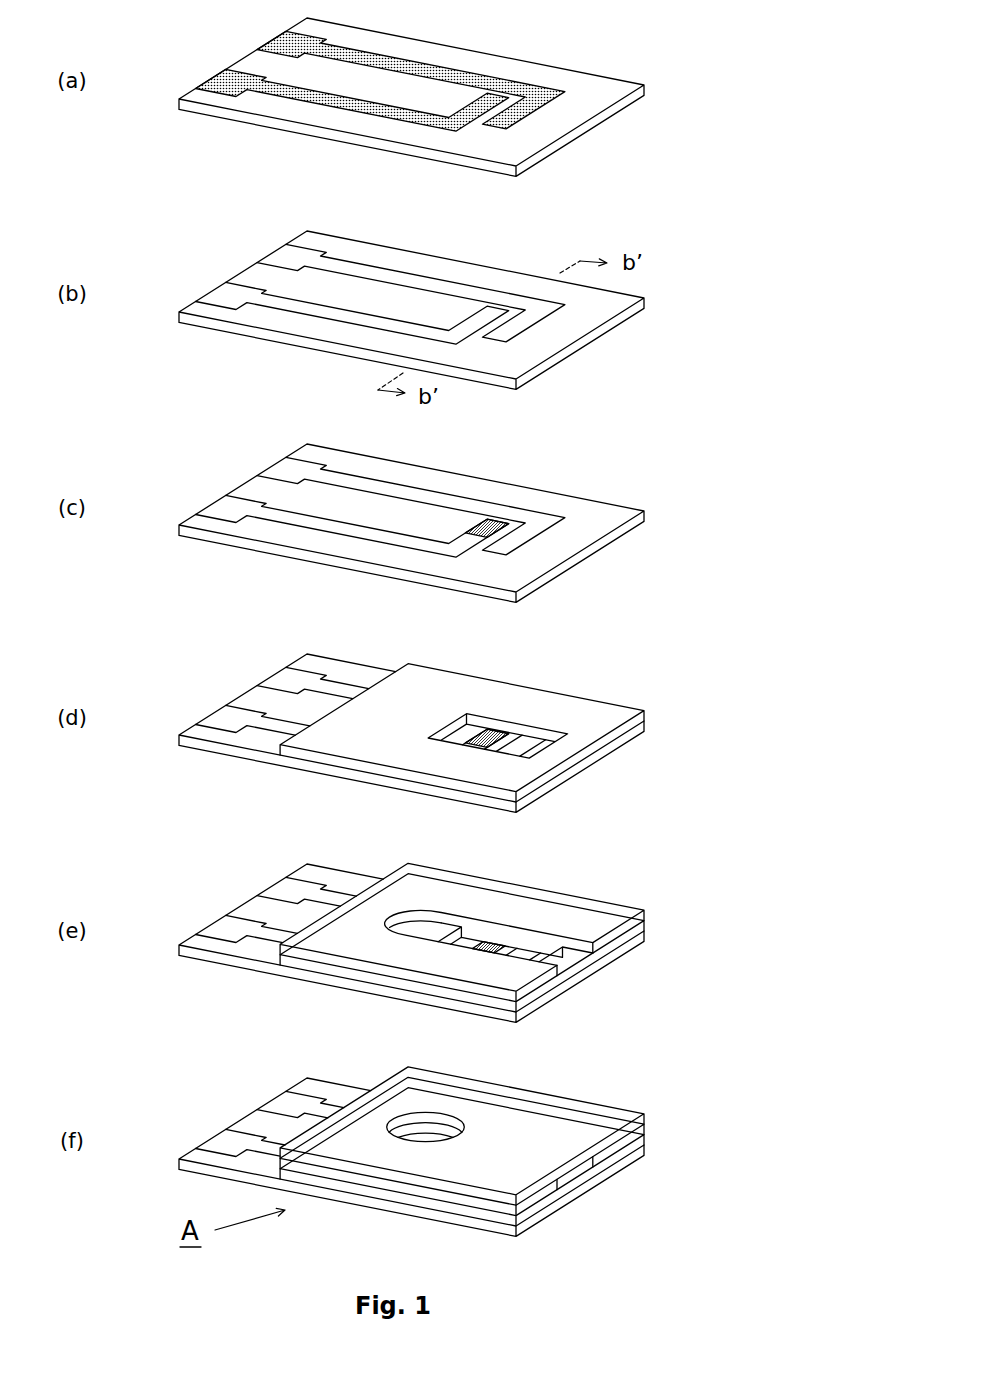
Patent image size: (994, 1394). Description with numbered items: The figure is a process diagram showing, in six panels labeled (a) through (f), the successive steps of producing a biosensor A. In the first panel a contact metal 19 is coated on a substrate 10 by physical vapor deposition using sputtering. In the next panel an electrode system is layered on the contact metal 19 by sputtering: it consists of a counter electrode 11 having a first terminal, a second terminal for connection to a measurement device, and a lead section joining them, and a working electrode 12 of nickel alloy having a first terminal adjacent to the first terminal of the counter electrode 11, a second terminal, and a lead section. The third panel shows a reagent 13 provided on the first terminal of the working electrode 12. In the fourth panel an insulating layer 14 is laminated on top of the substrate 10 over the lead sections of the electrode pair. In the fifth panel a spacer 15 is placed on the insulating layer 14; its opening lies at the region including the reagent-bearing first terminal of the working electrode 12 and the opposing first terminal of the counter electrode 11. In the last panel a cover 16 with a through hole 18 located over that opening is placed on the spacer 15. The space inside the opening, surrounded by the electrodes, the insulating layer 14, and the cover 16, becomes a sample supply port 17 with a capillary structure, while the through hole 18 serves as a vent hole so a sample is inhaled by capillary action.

The substrate 10 is at (427, 627).
The counter electrode 11 is at (420, 664).
The working electrode 12 is at (417, 322).
The reagent 13 is at (498, 688).
The insulating layer 14 is at (490, 945).
The spacer 15 is at (498, 1039).
The cover 16 is at (643, 1121).
The sample supply port 17 is at (570, 1177).
The through hole 18 is at (425, 1125).
The contact metal 19 is at (417, 108).